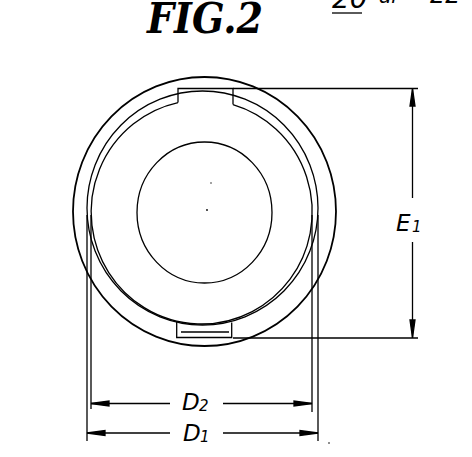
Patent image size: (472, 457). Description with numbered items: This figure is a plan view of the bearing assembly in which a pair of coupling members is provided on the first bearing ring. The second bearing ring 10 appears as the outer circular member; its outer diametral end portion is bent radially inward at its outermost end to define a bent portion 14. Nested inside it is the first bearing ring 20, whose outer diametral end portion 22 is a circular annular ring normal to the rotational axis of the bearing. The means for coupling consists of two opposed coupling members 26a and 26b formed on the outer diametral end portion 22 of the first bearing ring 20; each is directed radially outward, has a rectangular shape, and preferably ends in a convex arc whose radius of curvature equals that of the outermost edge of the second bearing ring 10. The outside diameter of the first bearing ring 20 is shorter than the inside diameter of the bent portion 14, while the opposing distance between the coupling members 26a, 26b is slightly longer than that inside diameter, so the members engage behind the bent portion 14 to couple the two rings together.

The second bearing ring 10 is at (308, 138).
The bent portion 14 is at (110, 143).
The first bearing ring 20 is at (298, 181).
The outer diametral end portion 22 is at (103, 186).
The coupling member 26a is at (204, 64).
The coupling member 26b is at (190, 337).